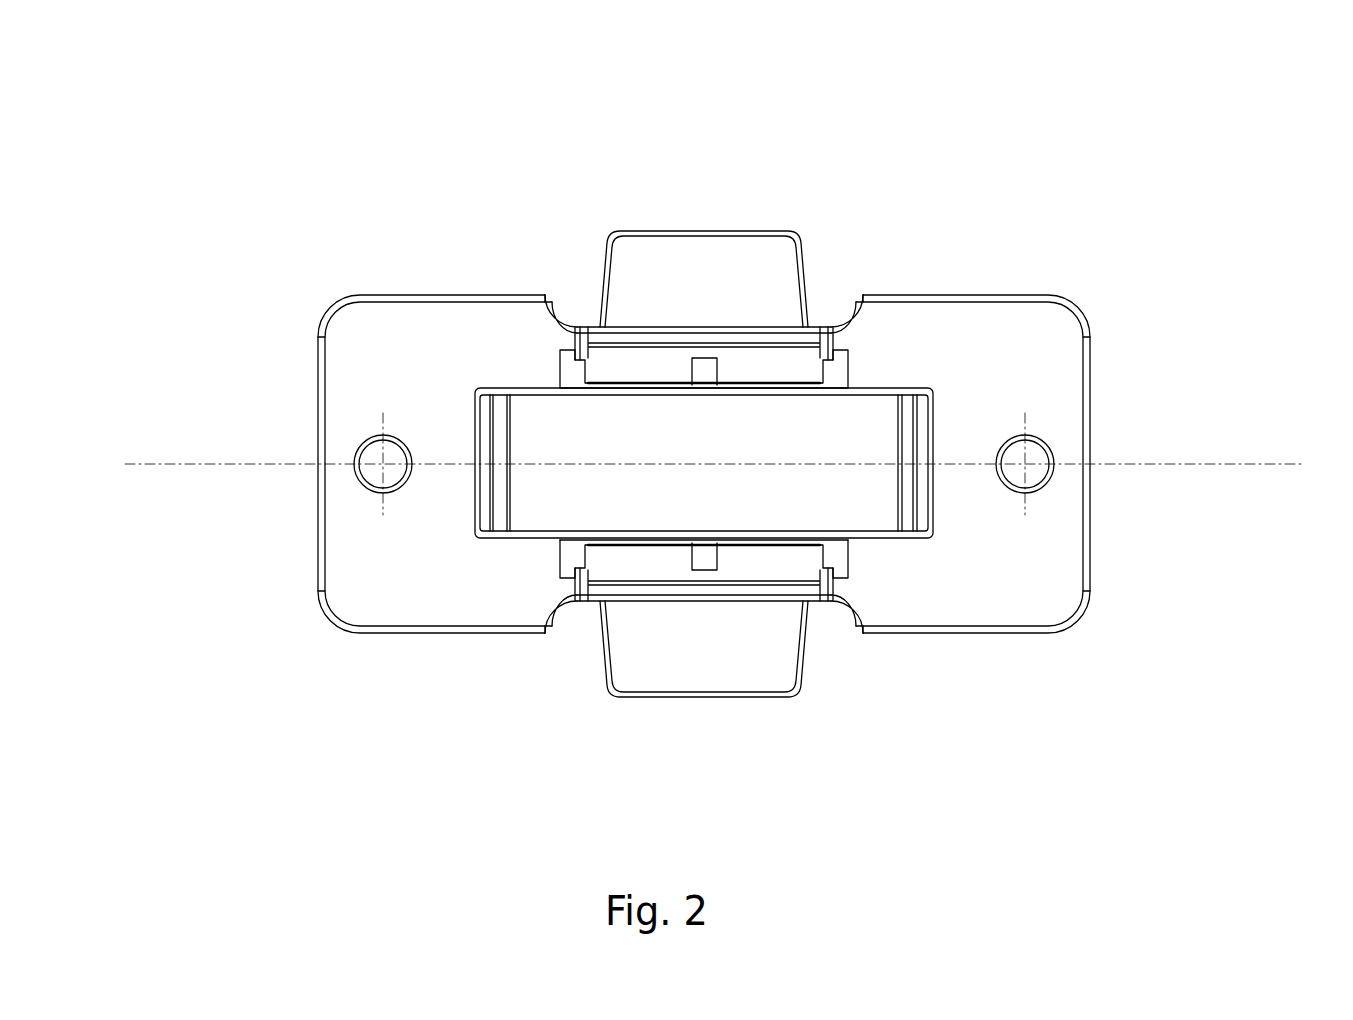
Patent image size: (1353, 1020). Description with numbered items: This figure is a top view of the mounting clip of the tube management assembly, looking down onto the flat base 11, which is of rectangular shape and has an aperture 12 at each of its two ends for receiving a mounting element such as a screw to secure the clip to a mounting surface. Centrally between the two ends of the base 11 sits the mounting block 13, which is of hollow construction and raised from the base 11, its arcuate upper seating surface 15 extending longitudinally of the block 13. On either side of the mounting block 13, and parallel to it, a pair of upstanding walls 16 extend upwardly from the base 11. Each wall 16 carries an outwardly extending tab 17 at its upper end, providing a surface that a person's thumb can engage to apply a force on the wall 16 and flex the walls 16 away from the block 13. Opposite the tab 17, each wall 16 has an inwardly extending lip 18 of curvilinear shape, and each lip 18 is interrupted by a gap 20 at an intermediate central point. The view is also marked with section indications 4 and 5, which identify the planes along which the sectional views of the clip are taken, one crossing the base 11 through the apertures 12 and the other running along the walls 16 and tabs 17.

The section line 4- 4 is at (125, 513).
The section line 5- 5 is at (757, 49).
The flat base 11 is at (1020, 588).
The aperture 12 is at (381, 438).
The mounting block 13 is at (880, 408).
The arcuate upper seating surface 15 is at (716, 461).
The upstanding wall 16 is at (583, 323).
The tab 17 is at (720, 257).
The lip 18 is at (610, 370).
The gap 20 is at (723, 374).